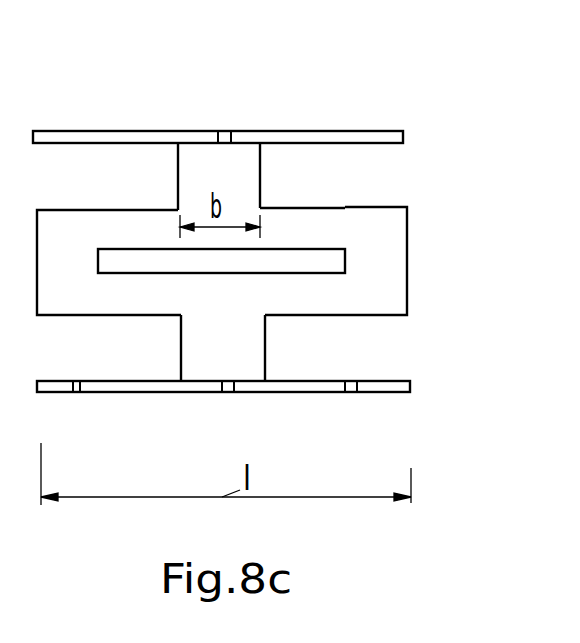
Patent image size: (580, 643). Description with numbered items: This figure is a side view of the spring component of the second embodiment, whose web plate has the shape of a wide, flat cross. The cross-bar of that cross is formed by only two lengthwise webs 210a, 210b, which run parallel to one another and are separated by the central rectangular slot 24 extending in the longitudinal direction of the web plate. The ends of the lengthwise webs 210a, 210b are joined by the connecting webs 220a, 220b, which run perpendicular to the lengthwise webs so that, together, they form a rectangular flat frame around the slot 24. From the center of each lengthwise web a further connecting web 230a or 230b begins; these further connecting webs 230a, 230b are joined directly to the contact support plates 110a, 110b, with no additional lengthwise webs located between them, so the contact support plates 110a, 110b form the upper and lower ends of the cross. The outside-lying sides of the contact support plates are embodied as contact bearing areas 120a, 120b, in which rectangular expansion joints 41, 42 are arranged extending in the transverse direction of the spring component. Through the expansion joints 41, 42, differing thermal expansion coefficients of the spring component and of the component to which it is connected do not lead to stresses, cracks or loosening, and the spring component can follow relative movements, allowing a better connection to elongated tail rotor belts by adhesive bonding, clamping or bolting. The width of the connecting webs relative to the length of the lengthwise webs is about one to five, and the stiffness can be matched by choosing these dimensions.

The expansion joint 41 is at (224, 131).
The expansion joint 42 is at (350, 381).
The central rectangular slot 24 is at (323, 258).
The contact support plate 110a is at (322, 131).
The contact bearing area 120a is at (279, 131).
The contact support plate 110b is at (315, 386).
The contact bearing area 120b is at (373, 392).
The lengthwise web 210a is at (332, 244).
The lengthwise web 210b is at (322, 310).
The connecting web 220a is at (95, 277).
The connecting web 220b is at (405, 281).
The further connecting web 230a is at (238, 188).
The further connecting web 230b is at (240, 364).